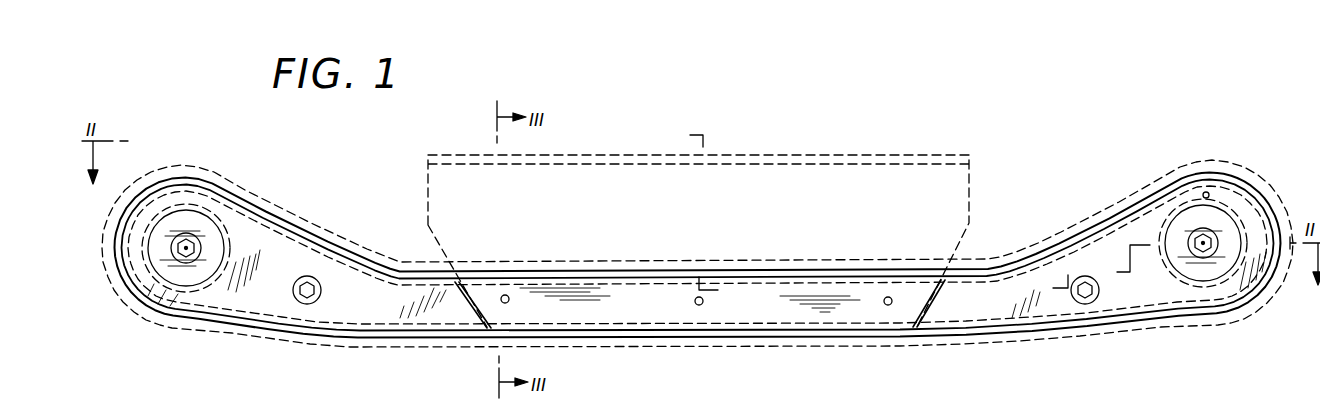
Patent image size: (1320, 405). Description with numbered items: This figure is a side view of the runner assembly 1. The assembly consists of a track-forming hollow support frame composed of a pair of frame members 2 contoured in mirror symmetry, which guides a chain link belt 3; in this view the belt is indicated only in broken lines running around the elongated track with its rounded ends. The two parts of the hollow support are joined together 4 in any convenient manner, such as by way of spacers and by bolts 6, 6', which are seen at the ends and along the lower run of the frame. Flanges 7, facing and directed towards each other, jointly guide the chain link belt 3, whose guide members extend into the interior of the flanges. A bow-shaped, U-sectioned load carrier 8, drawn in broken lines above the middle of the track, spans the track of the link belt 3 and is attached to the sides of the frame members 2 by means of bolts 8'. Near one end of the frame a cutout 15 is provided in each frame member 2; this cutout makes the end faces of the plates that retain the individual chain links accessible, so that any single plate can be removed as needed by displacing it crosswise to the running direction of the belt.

The runner assembly 1 is at (1075, 214).
The frame member 2 is at (390, 313).
The chain link belt 3 is at (333, 242).
The joint of the frame parts 4 is at (198, 228).
The bolt 6 is at (688, 300).
The bolt 6' is at (690, 329).
The flange 7 is at (1042, 265).
The load carrier 8 is at (698, 226).
The bolt 8' is at (705, 339).
The cutout 15 is at (1207, 191).